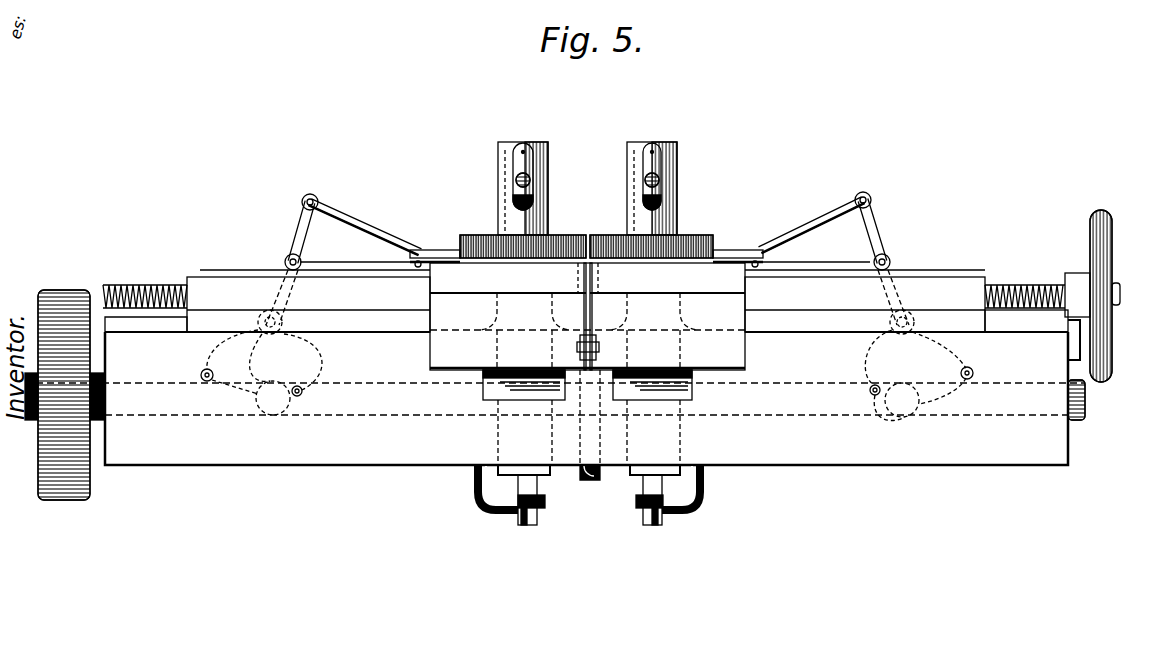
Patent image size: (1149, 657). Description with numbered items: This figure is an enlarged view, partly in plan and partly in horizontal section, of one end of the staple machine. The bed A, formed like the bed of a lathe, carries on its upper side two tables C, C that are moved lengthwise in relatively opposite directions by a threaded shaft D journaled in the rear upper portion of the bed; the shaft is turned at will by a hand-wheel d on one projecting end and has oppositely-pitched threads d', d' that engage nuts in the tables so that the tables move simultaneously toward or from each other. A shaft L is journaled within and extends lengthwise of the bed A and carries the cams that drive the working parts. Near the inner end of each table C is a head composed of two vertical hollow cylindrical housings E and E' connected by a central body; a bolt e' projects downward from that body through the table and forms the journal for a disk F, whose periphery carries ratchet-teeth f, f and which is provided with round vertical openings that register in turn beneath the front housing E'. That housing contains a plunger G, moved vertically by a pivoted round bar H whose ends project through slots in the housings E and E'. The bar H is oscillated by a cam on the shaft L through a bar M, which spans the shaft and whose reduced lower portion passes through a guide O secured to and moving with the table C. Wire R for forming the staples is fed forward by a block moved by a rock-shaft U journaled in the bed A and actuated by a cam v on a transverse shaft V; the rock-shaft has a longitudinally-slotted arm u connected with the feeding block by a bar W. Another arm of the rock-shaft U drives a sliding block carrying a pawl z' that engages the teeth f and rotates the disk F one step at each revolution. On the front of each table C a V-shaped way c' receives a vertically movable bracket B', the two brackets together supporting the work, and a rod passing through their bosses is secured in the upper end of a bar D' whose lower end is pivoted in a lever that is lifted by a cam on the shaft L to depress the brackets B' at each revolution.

The bolt e' is at (598, 137).
The plunger G is at (533, 165).
The round bar H is at (516, 181).
The front housing E' is at (535, 188).
The rear housing E is at (638, 251).
The disk F is at (588, 236).
The bar W is at (380, 236).
The longitudinally-slotted arm u is at (300, 236).
The pawl z' is at (586, 241).
The ratchet-teeth f is at (458, 254).
The wire R is at (240, 266).
The threaded shaft D is at (592, 270).
The oppositely-pitched threads d' is at (584, 282).
The hand-wheel d is at (1100, 315).
The table C is at (586, 297).
The bracket B' is at (587, 316).
The bar D' is at (600, 316).
The rock-shaft U is at (282, 324).
The shaft L is at (105, 387).
The bed A is at (586, 387).
The cam v is at (208, 384).
The transverse shaft V is at (586, 375).
The V-shaped way c' is at (587, 417).
The guide O is at (636, 501).
The bar M is at (648, 522).